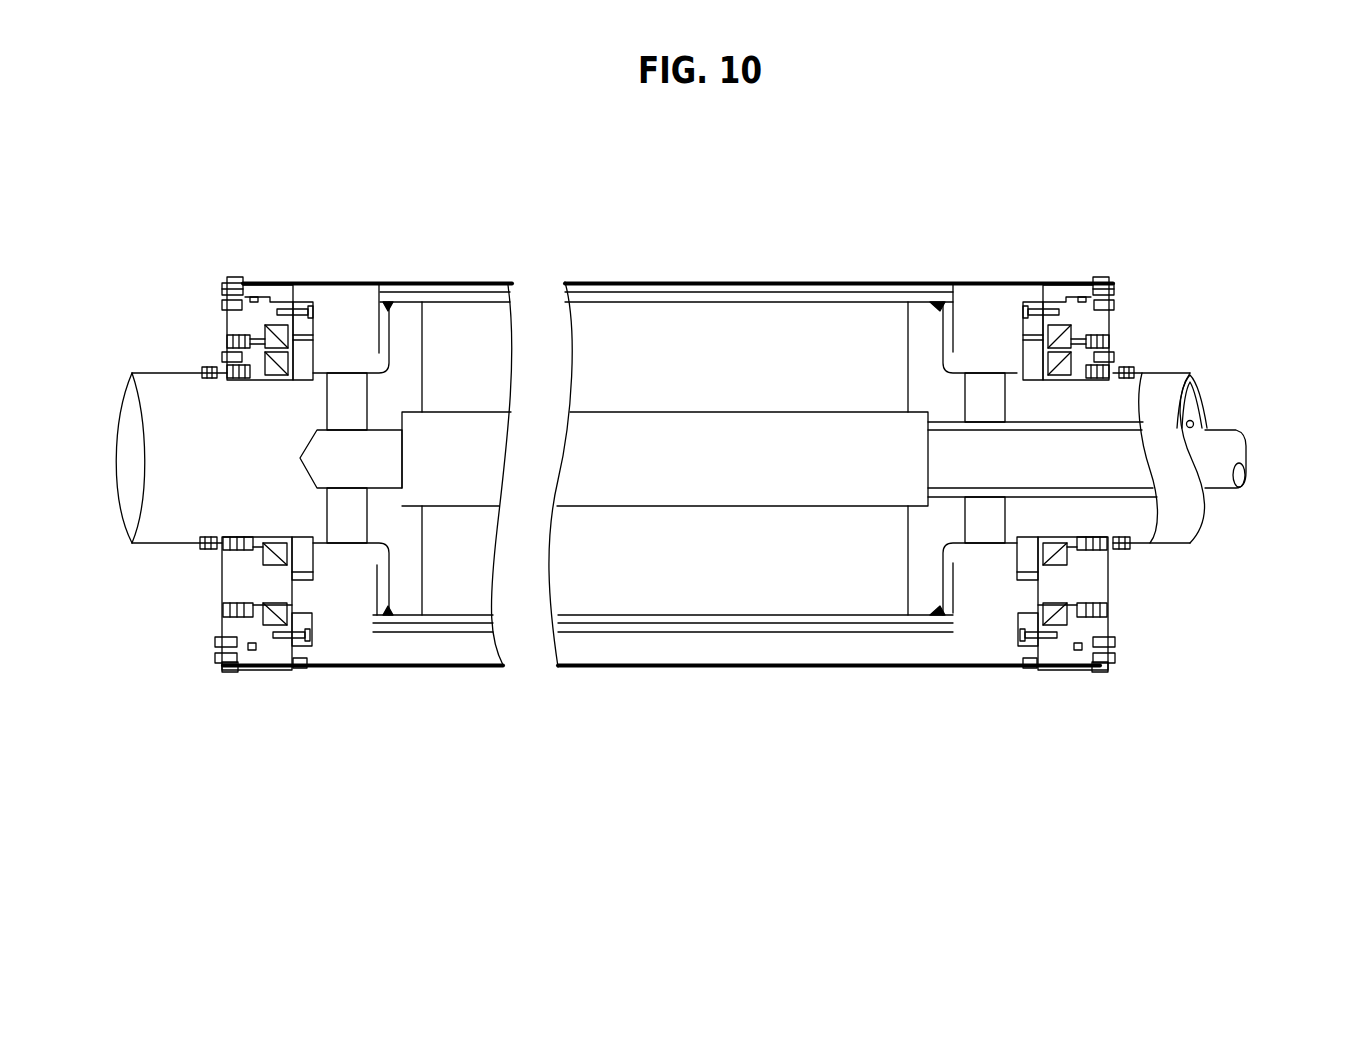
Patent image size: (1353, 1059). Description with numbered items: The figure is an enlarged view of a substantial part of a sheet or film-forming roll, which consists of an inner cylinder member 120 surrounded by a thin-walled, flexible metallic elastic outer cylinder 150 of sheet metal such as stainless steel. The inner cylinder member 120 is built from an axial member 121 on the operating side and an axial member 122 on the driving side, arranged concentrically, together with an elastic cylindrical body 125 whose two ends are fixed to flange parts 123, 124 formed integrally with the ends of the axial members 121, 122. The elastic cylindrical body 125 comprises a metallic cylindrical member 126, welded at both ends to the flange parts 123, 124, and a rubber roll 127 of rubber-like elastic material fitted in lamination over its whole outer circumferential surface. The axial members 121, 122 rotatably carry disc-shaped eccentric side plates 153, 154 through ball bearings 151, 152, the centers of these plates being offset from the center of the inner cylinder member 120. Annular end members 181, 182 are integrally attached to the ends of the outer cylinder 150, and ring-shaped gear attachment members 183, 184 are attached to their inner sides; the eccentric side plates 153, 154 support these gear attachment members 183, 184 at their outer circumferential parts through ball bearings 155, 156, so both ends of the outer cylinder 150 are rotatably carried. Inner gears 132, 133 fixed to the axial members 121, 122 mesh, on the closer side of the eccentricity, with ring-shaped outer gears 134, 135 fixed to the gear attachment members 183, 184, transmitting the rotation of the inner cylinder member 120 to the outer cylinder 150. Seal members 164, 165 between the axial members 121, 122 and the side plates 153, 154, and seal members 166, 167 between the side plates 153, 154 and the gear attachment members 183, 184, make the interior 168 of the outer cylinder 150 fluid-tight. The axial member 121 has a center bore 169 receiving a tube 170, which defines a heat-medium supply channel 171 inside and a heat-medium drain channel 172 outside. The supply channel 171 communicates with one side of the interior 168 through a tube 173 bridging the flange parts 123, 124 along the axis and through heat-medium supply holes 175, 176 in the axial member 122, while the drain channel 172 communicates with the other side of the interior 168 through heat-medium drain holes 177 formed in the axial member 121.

The inner cylinder member 120 is at (952, 350).
The axial member on operating side 121 is at (1190, 510).
The axial member on driving side 122 is at (133, 410).
The flange part 123 is at (920, 312).
The flange part 124 is at (412, 312).
The elastic cylindrical body 125 is at (760, 620).
The metallic cylindrical member 126 is at (612, 298).
The rubber roll 127 is at (688, 290).
The inner gear 132 is at (1023, 357).
The inner gear 133 is at (305, 560).
The outer gear 134 is at (1060, 282).
The outer gear 135 is at (300, 665).
The metallic elastic outer cylinder 150 is at (768, 280).
The ball bearing 151 is at (1093, 558).
The ball bearing 152 is at (235, 556).
The eccentric side plate 153 is at (1090, 583).
The eccentric side plate 154 is at (240, 580).
The ball bearing 155 is at (1088, 622).
The ball bearing 156 is at (240, 620).
The seal member 164 is at (1065, 355).
The seal member 165 is at (228, 363).
The seal member 166 is at (1058, 325).
The seal member 167 is at (232, 333).
The interior of the metallic elastic outer cylinder 168 is at (657, 655).
The center bore 169 is at (1097, 428).
The tube 170 is at (1232, 440).
The heat-medium supply channel 171 is at (1245, 472).
The heat-medium drain channel 172 is at (1195, 425).
The tube 173 is at (620, 493).
The heat-medium supply hole 175 is at (388, 458).
The heat-medium supply hole 176 is at (343, 385).
The heat-medium drain holes 177 is at (985, 530).
The annular end member 181 is at (1043, 655).
The annular end member 182 is at (282, 655).
The gear attachment member 183 is at (1075, 660).
The gear attachment member 184 is at (262, 645).